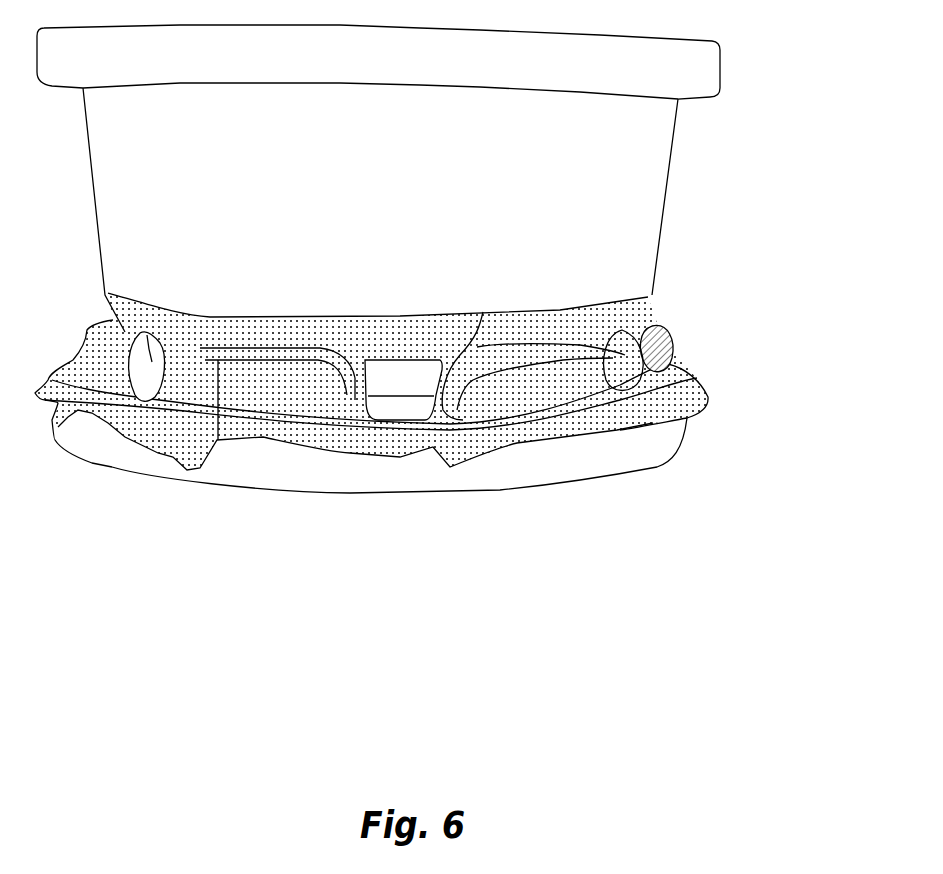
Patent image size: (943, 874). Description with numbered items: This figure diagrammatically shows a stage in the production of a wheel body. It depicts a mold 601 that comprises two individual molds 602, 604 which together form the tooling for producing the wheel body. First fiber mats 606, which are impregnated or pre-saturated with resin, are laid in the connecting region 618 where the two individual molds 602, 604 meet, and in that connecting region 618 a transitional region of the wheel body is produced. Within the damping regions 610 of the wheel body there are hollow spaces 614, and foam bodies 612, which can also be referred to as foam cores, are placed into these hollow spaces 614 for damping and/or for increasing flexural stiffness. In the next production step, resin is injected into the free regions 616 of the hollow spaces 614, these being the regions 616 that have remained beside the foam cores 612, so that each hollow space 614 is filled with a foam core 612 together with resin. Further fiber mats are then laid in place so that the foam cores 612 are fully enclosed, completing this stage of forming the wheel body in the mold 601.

The mold 601 is at (277, 612).
The individual mold 602 is at (637, 201).
The individual mold 604 is at (688, 452).
The first fiber mats 606 is at (480, 447).
The damping regions 610 is at (163, 440).
The foam bodies 612 is at (160, 325).
The hollow spaces 614 is at (350, 340).
The free regions 616 is at (177, 334).
The connecting region 618 is at (710, 325).